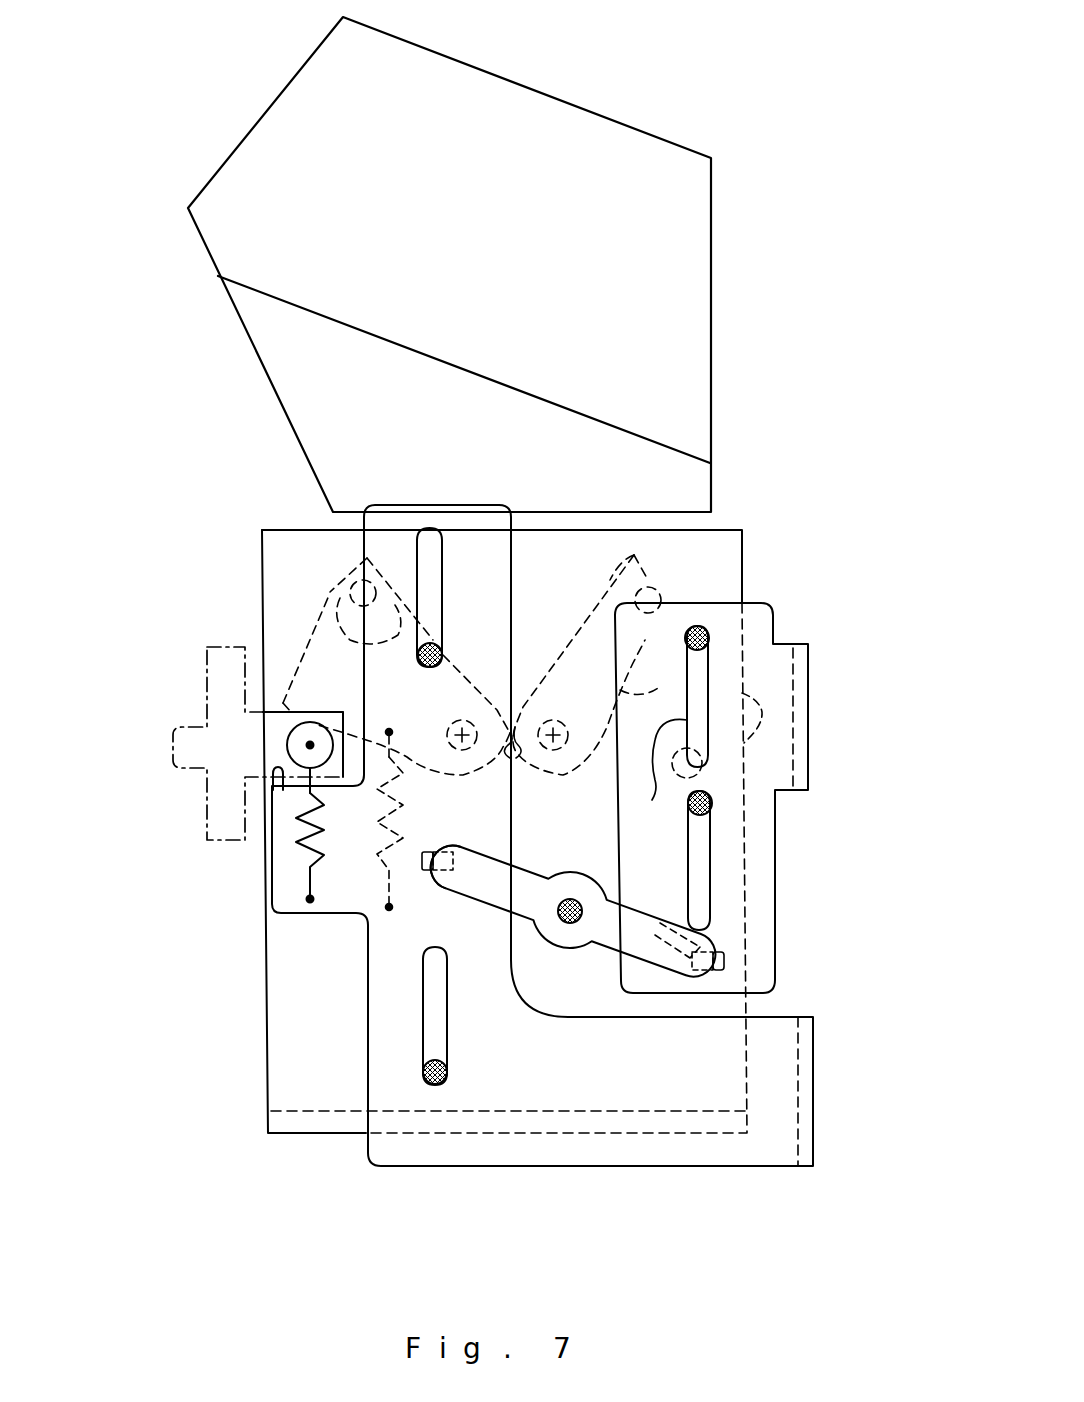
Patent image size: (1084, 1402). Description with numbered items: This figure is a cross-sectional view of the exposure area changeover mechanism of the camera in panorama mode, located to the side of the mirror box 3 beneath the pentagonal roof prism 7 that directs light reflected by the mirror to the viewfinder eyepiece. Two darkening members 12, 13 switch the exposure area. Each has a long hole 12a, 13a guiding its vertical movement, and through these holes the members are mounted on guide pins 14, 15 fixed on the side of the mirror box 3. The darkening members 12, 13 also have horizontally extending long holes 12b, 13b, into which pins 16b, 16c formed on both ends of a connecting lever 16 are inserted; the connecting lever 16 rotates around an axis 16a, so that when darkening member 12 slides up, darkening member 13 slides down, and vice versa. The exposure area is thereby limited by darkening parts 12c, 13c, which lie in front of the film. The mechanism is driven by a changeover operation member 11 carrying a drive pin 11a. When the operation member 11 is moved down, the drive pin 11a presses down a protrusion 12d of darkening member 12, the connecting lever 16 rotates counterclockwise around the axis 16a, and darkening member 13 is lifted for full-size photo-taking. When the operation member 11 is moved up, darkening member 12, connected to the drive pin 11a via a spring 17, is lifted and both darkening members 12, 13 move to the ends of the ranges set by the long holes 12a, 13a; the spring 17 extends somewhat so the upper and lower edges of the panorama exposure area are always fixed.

The mirror box 3 is at (265, 1060).
The pentagonal roof prism 7 is at (643, 131).
The changeover operation member 11 is at (205, 793).
The drive pin 11a is at (305, 724).
The darkening member 12 is at (510, 1166).
The long hole 12a is at (475, 587).
The long hole 12b is at (430, 851).
The darkening part 12c is at (813, 1087).
The protrusion 12d is at (283, 786).
The darkening member 13 is at (771, 615).
The long hole 13a is at (687, 843).
The long hole 13b is at (727, 976).
The darkening part 13c is at (805, 703).
The guide pin 14 is at (418, 656).
The guide pin 15 is at (707, 630).
The connecting lever 16 is at (553, 876).
The axis 16a is at (572, 923).
The pin 16b is at (425, 884).
The pin 16c is at (660, 923).
The spring 17 is at (322, 837).